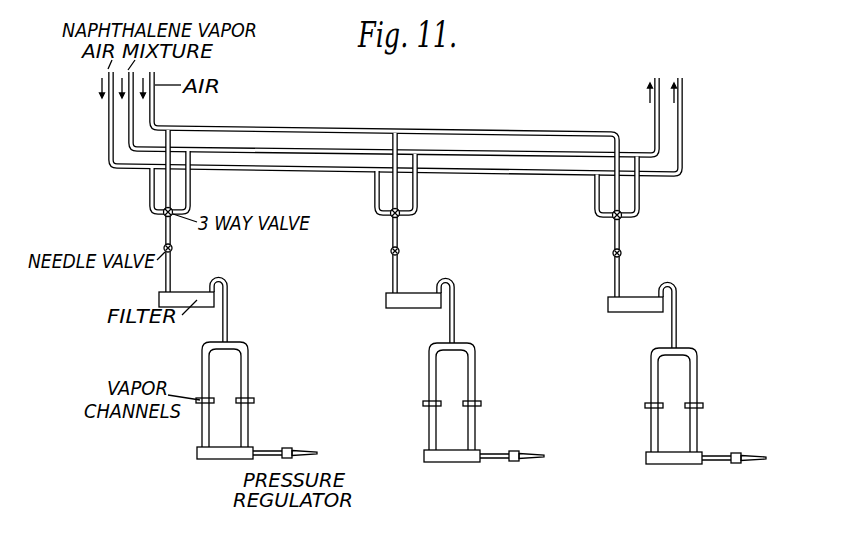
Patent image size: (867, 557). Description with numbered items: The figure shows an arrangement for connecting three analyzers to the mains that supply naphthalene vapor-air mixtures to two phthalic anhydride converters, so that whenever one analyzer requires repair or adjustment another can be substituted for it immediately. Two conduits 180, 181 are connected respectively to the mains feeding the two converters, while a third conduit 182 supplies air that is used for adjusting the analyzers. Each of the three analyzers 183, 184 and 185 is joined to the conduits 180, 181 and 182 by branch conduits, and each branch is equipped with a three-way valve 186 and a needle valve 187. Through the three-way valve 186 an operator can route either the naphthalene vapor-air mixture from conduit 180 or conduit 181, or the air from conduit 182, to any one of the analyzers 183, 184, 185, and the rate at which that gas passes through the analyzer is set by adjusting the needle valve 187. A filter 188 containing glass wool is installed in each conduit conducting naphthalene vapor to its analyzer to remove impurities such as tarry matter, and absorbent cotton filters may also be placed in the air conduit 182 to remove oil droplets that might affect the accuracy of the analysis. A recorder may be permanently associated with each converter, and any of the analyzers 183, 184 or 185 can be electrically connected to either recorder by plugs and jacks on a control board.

The conduit 180 is at (108, 112).
The conduit 181 is at (128, 123).
The air conduit 182 is at (308, 130).
The analyzer 183 is at (197, 426).
The analyzer 184 is at (426, 418).
The analyzer 185 is at (651, 427).
The three-way valve 186 is at (164, 212).
The needle valve 187 is at (173, 249).
The filter 188 is at (229, 295).